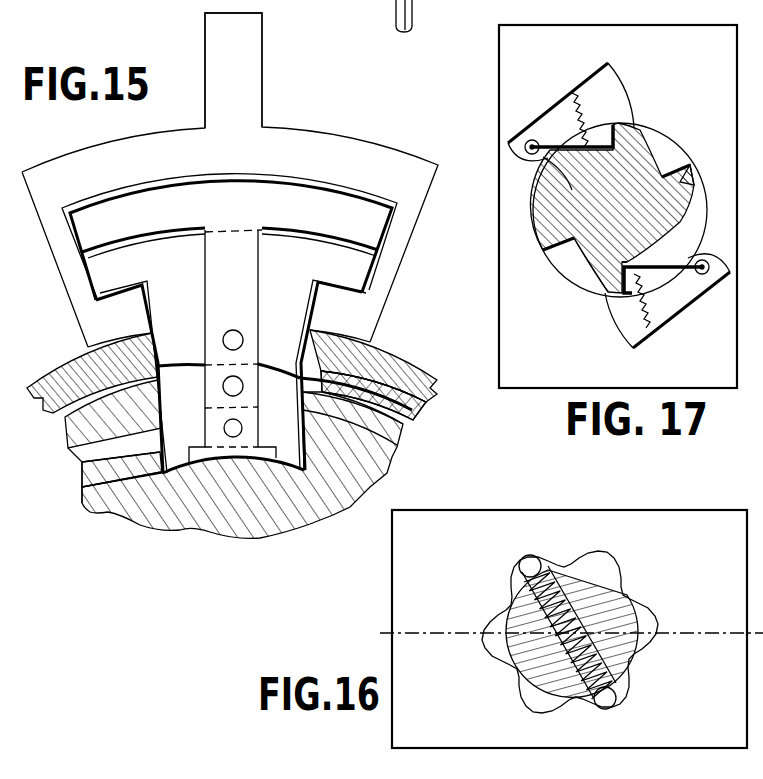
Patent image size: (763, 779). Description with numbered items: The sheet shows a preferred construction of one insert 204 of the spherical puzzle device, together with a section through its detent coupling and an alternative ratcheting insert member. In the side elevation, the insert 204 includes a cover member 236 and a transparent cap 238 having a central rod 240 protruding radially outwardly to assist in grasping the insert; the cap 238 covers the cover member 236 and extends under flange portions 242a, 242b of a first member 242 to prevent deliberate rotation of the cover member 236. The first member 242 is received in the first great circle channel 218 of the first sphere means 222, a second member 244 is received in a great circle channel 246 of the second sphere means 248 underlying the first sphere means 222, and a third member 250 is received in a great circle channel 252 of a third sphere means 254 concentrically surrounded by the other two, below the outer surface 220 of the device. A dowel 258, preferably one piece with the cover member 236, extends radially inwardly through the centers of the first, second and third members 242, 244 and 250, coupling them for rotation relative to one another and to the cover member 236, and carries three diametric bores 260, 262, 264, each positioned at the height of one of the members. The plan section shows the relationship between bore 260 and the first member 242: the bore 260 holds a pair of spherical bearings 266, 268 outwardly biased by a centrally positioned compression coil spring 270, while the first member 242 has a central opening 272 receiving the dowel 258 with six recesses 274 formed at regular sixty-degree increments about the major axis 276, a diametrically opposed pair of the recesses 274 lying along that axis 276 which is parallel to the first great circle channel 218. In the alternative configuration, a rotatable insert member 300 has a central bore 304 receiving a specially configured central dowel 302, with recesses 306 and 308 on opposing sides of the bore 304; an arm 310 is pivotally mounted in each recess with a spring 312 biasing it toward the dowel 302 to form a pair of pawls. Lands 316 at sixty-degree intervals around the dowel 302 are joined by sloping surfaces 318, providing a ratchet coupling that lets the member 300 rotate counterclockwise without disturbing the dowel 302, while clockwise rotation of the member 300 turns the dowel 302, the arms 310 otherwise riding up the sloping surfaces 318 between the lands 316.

In FIG. 15, the insert 204 is at (178, 80).
In FIG. 15, the first great circle channel 218 is at (96, 441).
In FIG. 15, the outer surface 220 is at (60, 370).
In FIG. 15, the first sphere means 222 is at (393, 358).
In FIG. 15, the cover member 236 is at (122, 210).
In FIG. 15, the transparent cap 238 is at (355, 152).
In FIG. 15, the central rod 240 is at (249, 88).
In FIG. 15, the first member 242 is at (233, 327).
In FIG. 16, the first member 242 is at (503, 532).
In FIG. 15, the flange portion 242a is at (110, 280).
In FIG. 15, the flange portion 242b is at (352, 273).
In FIG. 15, the second member 244 is at (413, 412).
In FIG. 15, the great circle channel 246 is at (403, 426).
In FIG. 15, the second sphere means 248 is at (398, 448).
In FIG. 15, the third member 250 is at (84, 488).
In FIG. 15, the great circle channel 252 is at (83, 464).
In FIG. 15, the third sphere means 254 is at (280, 520).
In FIG. 15, the dowel 258 is at (230, 265).
In FIG. 16, the dowel 258 is at (612, 600).
In FIG. 15, the diametric bore 260 is at (233, 332).
In FIG. 16, the diametric bore 260 is at (512, 603).
In FIG. 15, the diametric bore 262 is at (223, 386).
In FIG. 15, the diametric bore 264 is at (224, 428).
In FIG. 16, the spherical bearing 266 is at (528, 560).
In FIG. 16, the spherical bearing 268 is at (617, 705).
In FIG. 16, the compression coil spring 270 is at (512, 660).
In FIG. 16, the central opening 272 is at (512, 648).
In FIG. 16, the recess 274 is at (607, 556).
In FIG. 16, the major axis 276 is at (407, 633).
In FIG. 17, the rotatable insert member 300 is at (521, 87).
In FIG. 17, the central dowel 302 is at (607, 210).
In FIG. 17, the central bore 304 is at (572, 267).
In FIG. 17, the recess 306 is at (617, 313).
In FIG. 17, the recess 308 is at (610, 88).
In FIG. 17, the arm 310 is at (680, 300).
In FIG. 17, the spring 312 is at (625, 335).
In FIG. 17, the land 316 is at (667, 178).
In FIG. 17, the sloping surface 318 is at (687, 203).